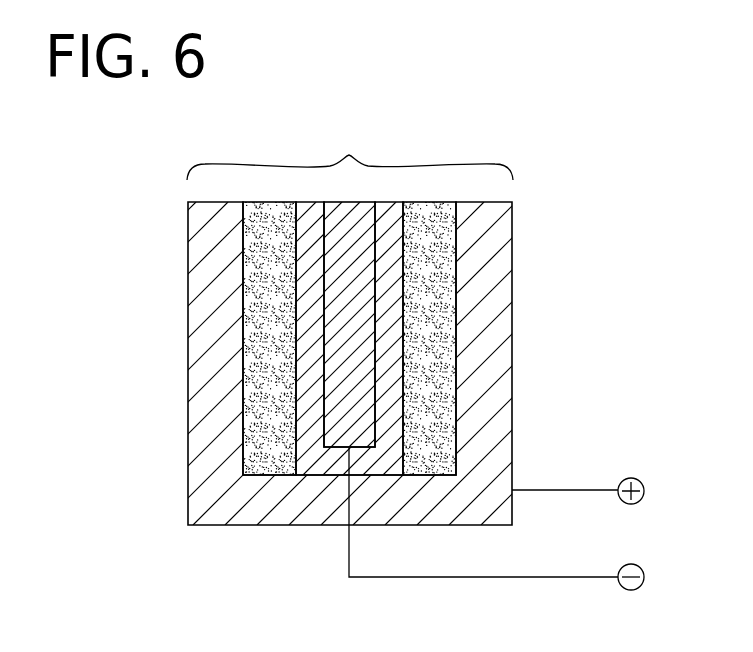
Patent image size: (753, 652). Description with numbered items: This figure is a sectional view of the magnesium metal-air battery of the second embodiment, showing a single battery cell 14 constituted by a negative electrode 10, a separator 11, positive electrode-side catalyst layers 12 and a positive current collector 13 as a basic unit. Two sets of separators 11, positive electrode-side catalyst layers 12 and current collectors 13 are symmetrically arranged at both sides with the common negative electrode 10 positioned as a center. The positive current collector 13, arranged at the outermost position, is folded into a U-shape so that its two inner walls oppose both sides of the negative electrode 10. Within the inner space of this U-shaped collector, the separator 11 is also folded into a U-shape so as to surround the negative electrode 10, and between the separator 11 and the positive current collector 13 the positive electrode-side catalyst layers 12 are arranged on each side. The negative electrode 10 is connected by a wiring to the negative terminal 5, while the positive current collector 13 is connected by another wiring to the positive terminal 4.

The positive terminal 4 is at (639, 480).
The negative terminal 5 is at (639, 567).
The negative electrode 10 is at (350, 243).
The separator 11 is at (312, 318).
The positive electrode-side catalyst layer 12 is at (265, 384).
The positive current collector 13 is at (225, 448).
The battery cell 14 is at (350, 144).